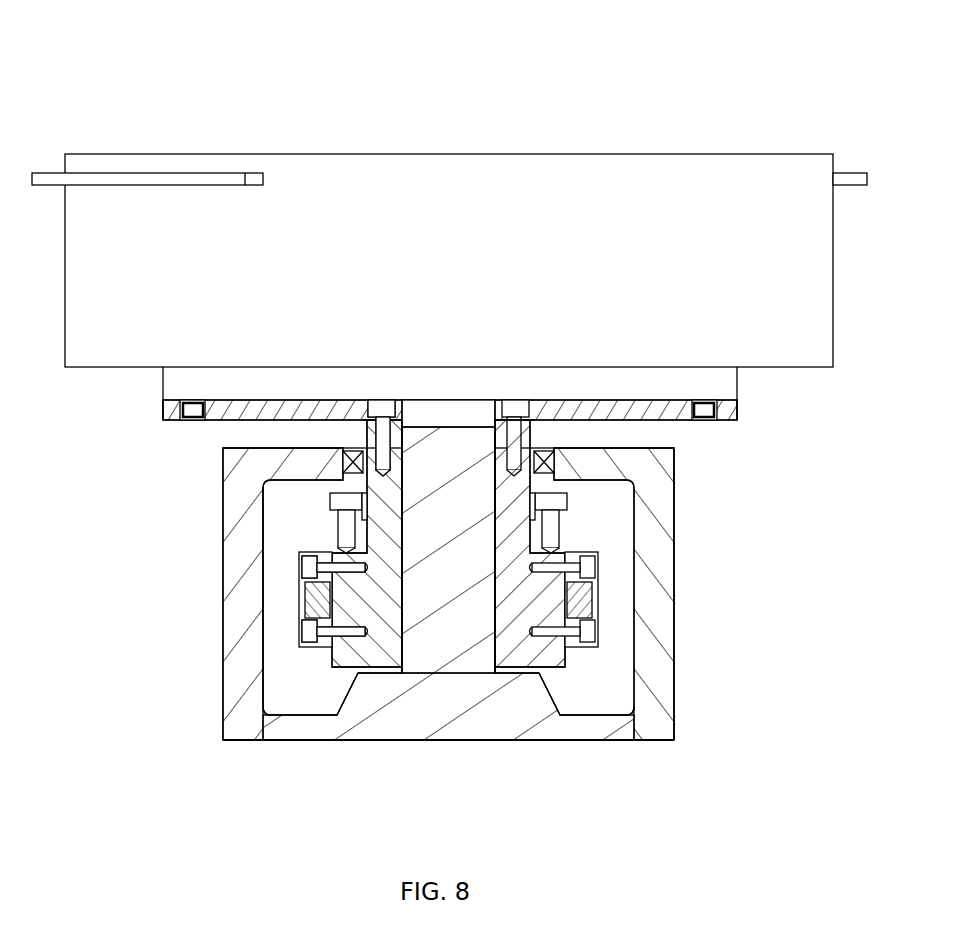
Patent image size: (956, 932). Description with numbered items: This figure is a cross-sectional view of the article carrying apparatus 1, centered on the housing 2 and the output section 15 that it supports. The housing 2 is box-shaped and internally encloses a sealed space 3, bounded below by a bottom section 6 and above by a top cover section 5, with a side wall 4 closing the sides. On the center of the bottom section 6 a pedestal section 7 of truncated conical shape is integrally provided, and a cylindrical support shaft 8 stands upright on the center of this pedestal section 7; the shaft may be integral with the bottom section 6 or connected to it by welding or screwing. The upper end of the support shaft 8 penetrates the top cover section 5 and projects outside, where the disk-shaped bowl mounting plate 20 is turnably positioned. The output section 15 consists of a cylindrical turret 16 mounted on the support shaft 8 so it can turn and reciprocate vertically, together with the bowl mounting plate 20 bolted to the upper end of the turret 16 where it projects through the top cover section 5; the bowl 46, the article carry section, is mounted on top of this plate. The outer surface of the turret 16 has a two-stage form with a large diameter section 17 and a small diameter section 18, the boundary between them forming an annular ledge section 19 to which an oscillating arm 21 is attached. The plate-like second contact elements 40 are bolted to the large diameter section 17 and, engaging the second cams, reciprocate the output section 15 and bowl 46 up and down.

The article carrying apparatus 1 is at (177, 105).
The bowl 46 is at (425, 175).
The output section 15 is at (358, 440).
The bowl mounting plate 20 is at (740, 410).
The support shaft 8 is at (473, 450).
The top cover section 5 is at (645, 461).
The small diameter section 18 is at (343, 476).
The oscillating arm 21 is at (332, 503).
The ledge section 19 is at (548, 510).
The large diameter section 17 is at (302, 567).
The second contact element 40 is at (338, 590).
The housing 2 is at (687, 610).
The side wall 4 is at (658, 638).
The pedestal section 7 is at (530, 688).
The space 3 is at (617, 702).
The bottom section 6 is at (610, 733).
The turret 16 is at (324, 668).